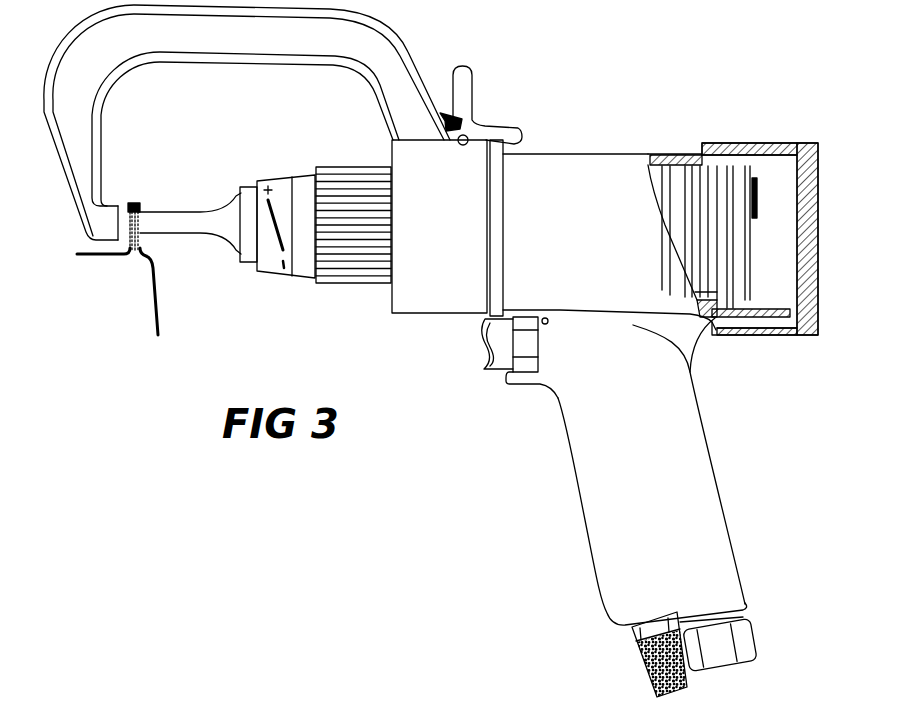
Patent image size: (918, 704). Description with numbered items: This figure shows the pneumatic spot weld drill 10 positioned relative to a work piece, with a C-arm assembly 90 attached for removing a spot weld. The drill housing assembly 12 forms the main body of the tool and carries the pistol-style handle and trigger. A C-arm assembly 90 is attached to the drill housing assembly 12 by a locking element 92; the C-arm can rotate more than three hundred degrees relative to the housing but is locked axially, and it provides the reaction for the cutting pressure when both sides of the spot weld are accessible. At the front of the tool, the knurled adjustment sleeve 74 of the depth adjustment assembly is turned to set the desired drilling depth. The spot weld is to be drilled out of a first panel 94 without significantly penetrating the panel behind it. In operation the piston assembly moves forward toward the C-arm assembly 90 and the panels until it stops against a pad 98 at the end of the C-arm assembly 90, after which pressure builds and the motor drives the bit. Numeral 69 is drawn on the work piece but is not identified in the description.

The spot weld drill 10 is at (558, 466).
The drill housing assembly 12 is at (452, 305).
The knurled adjustment sleeve 74 is at (372, 283).
The C-arm assembly 90 is at (413, 47).
The locking element 92 is at (473, 88).
The pad 98 is at (133, 203).
The workpiece 69 is at (113, 256).
The first panel 94 is at (160, 300).